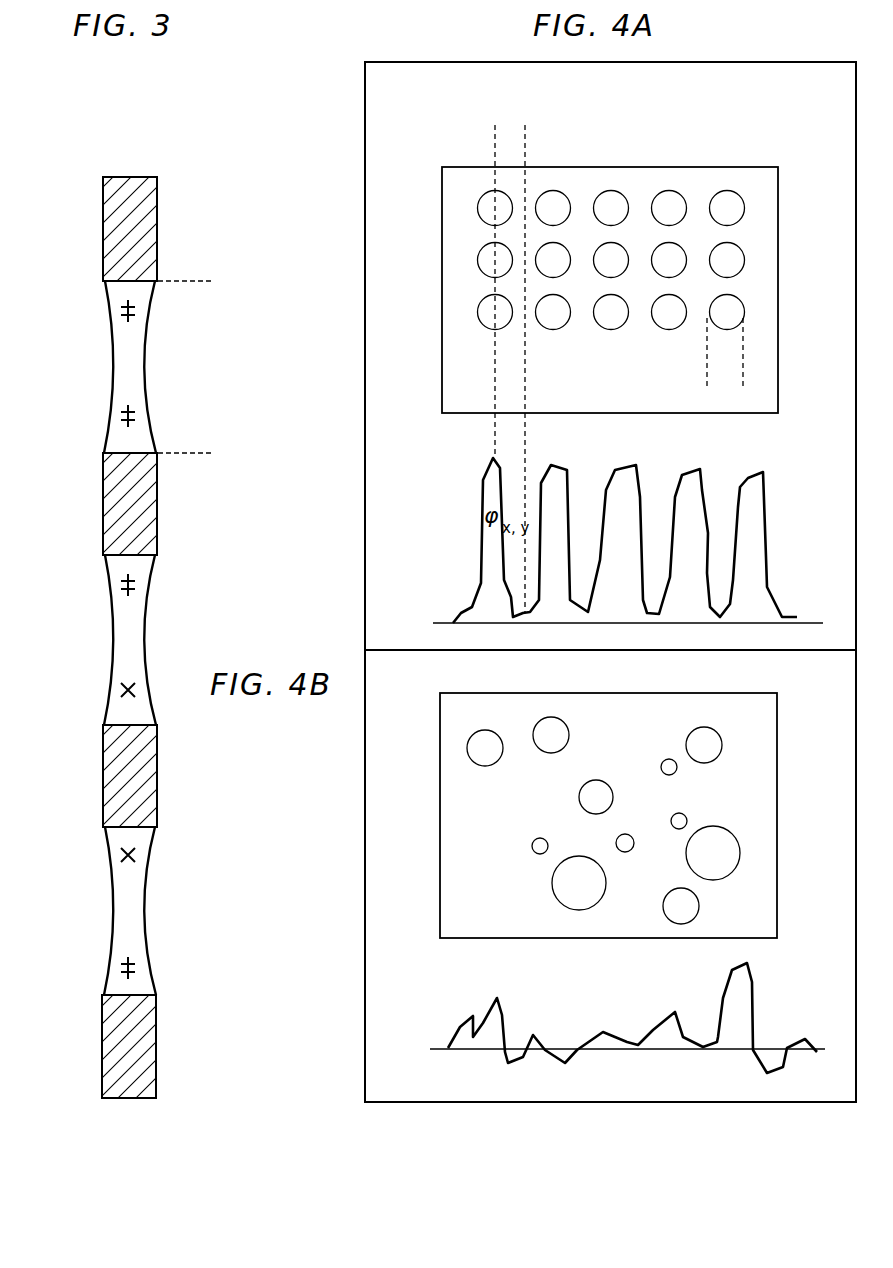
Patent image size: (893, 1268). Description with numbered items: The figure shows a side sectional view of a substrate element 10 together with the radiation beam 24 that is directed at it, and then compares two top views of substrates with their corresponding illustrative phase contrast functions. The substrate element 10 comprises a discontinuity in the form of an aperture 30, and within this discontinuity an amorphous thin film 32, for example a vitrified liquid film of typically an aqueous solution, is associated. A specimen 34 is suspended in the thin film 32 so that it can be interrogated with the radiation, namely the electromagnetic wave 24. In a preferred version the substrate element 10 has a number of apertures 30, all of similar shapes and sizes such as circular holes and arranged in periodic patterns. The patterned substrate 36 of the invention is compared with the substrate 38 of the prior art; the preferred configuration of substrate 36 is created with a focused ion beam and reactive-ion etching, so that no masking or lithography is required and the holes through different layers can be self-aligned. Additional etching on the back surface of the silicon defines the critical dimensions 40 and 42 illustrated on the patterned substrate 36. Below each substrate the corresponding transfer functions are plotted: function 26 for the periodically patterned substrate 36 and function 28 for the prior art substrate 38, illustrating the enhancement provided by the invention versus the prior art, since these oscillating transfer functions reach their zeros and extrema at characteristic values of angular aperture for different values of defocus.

In FIG. 3, the substrate element 10 is at (115, 165).
In FIG. 3, the radiation beam 24 is at (88, 380).
In FIG. 3, the aperture 30 is at (201, 288).
In FIG. 3, the amorphous thin film 32 is at (142, 911).
In FIG. 3, the specimen 34 is at (99, 966).
In FIG. 4A, the patterned substrate 36 is at (783, 158).
In FIG. 4A, the critical dimension 40 is at (577, 139).
In FIG. 4A, the critical dimension 42 is at (797, 376).
In FIG. 4A, the phase contrast function 26 is at (789, 542).
In FIG. 4B, the prior art substrate 38 is at (821, 695).
In FIG. 4B, the phase contrast function 28 is at (627, 1018).